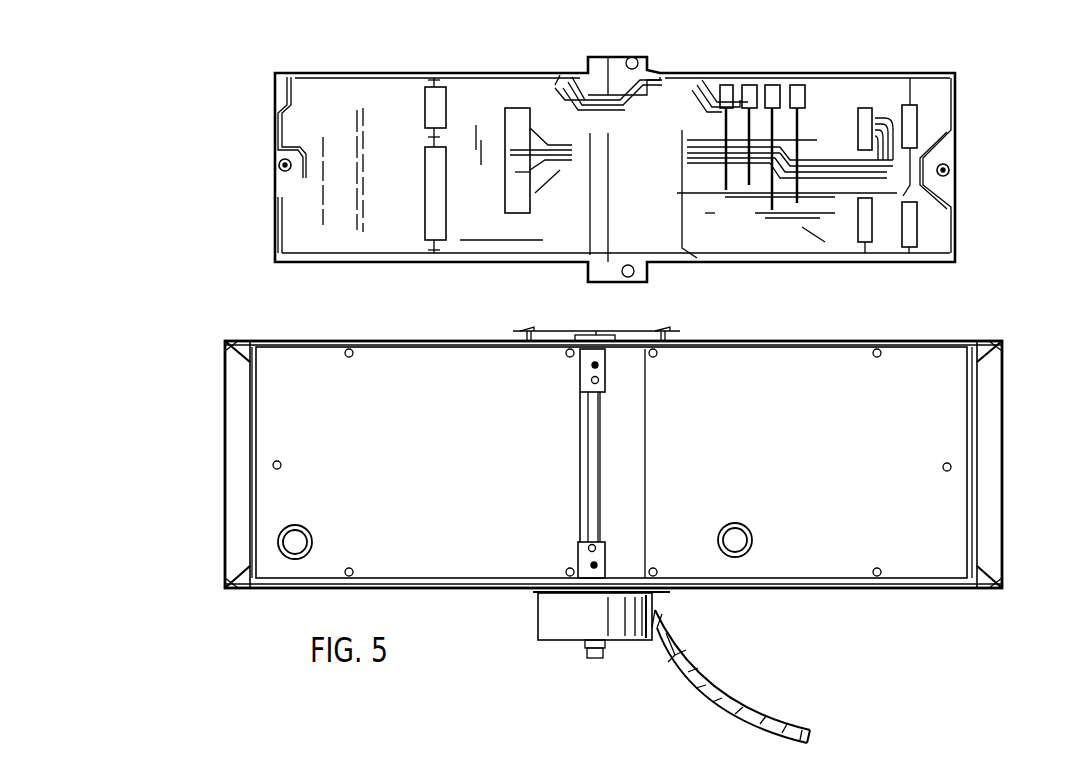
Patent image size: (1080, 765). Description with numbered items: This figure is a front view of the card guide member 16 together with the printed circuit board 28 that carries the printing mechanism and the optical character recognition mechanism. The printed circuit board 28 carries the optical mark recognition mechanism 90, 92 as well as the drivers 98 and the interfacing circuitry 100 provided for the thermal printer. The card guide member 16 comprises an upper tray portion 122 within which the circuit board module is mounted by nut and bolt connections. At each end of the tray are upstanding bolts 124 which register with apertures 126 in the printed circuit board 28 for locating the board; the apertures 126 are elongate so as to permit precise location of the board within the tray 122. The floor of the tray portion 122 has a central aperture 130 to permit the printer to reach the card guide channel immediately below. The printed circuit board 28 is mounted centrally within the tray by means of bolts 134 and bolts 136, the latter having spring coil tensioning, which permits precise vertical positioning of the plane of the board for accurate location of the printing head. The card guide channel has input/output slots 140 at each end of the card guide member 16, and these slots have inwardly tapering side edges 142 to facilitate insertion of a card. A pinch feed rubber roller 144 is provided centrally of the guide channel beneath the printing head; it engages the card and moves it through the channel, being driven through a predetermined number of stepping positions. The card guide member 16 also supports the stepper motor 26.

The card guide member 16 is at (255, 447).
The stepper motor 26 is at (550, 630).
The printed circuit board 28 is at (276, 84).
The optical mark recognition mechanism 90 is at (722, 104).
The optical mark recognition mechanism 92 is at (749, 135).
The drivers 98 is at (772, 147).
The interfacing circuitry 100 is at (797, 144).
The upper tray portion 122 is at (398, 348).
The upstanding bolts 124 is at (281, 468).
The apertures 126 is at (279, 163).
The central aperture 130 is at (633, 503).
The bolts 134 is at (607, 562).
The bolts 136 is at (588, 548).
The input/output slots 140 is at (248, 502).
The inwardly tapering side edges 142 is at (240, 357).
The pinch feed rubber roller 144 is at (600, 443).